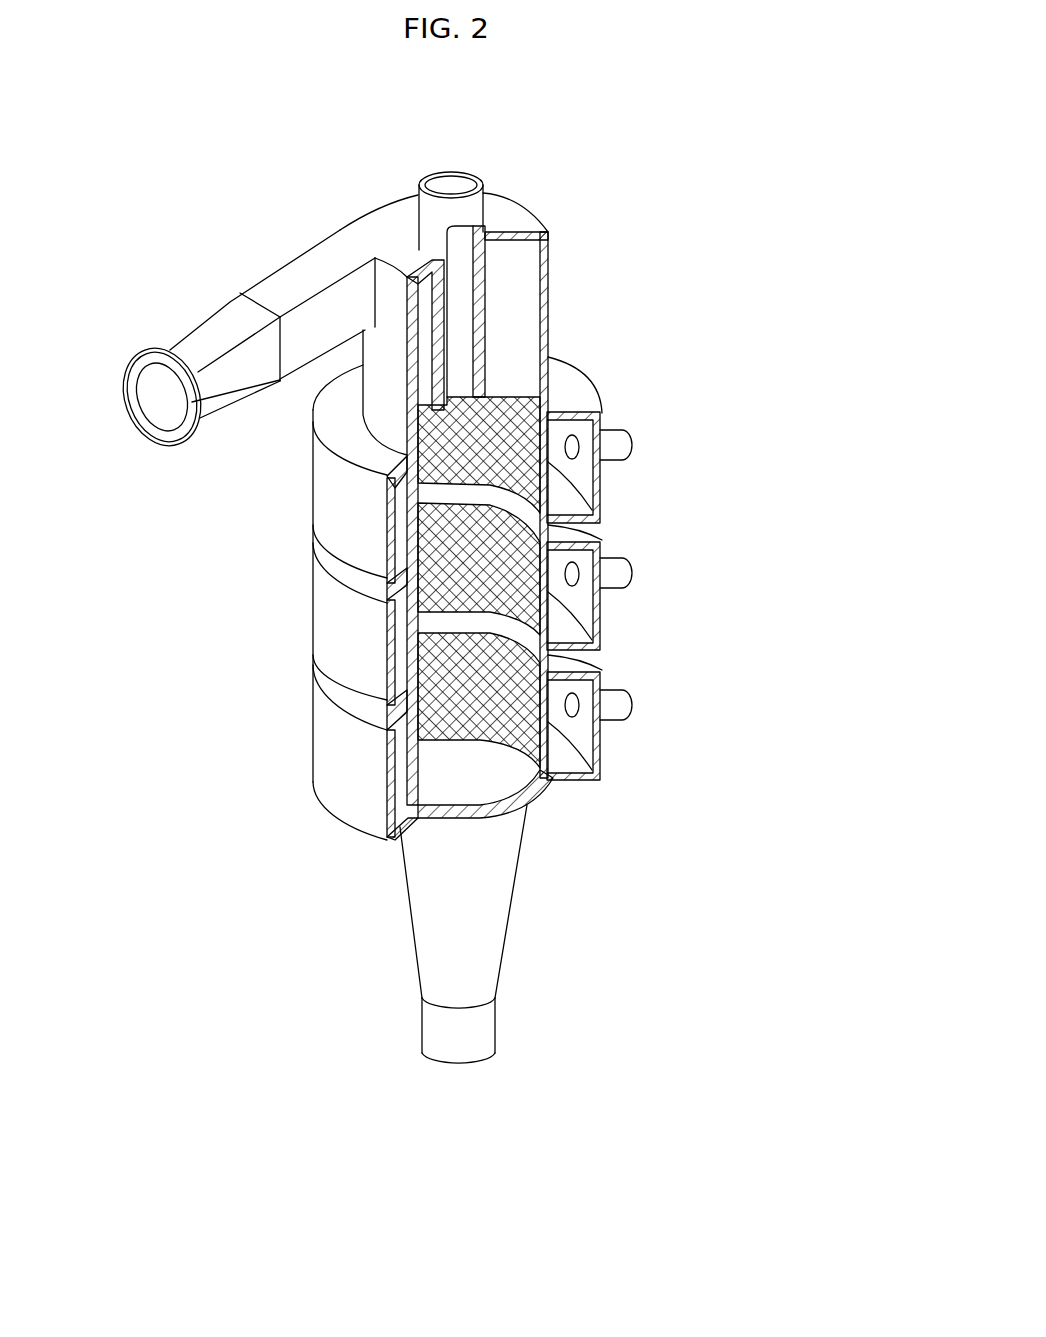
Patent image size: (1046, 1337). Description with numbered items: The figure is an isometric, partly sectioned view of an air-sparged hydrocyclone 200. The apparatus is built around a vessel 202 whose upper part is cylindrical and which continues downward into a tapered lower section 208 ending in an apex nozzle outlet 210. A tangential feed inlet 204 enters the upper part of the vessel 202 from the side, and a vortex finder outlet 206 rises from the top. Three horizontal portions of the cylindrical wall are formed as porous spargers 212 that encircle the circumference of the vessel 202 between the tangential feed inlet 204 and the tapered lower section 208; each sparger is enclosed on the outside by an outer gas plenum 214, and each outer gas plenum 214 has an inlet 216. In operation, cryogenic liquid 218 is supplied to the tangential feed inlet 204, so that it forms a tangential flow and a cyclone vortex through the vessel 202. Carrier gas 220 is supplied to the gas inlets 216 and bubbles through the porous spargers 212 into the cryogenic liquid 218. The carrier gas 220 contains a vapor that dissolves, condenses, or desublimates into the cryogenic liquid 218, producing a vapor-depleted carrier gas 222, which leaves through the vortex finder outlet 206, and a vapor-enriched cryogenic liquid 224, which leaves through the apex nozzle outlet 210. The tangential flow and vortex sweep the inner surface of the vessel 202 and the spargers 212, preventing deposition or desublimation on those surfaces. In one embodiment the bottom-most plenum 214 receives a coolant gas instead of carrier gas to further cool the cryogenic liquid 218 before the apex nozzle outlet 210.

The air-sparged hydrocyclone 200 is at (150, 104).
The vessel 202 is at (530, 320).
The tangential feed inlet 204 is at (200, 371).
The vortex finder outlet 206 is at (421, 209).
The tapered lower section 208 is at (510, 883).
The apex nozzle outlet 210 is at (424, 1033).
The porous spargers 212 is at (437, 680).
The outer gas plenums 214 is at (575, 382).
The inlets 216 is at (616, 427).
The cryogenic liquid 218 is at (158, 407).
The carrier gas 220 is at (642, 443).
The vapor-depleted carrier gas 222 is at (455, 178).
The vapor-enriched cryogenic liquid 224 is at (457, 1075).